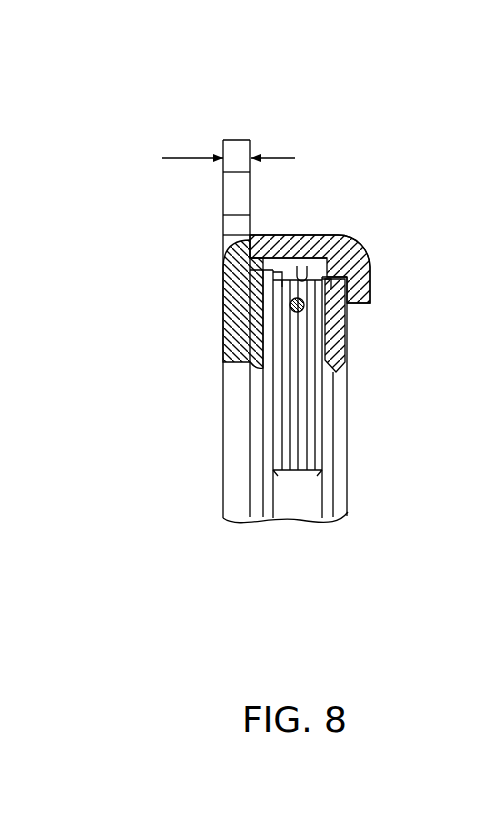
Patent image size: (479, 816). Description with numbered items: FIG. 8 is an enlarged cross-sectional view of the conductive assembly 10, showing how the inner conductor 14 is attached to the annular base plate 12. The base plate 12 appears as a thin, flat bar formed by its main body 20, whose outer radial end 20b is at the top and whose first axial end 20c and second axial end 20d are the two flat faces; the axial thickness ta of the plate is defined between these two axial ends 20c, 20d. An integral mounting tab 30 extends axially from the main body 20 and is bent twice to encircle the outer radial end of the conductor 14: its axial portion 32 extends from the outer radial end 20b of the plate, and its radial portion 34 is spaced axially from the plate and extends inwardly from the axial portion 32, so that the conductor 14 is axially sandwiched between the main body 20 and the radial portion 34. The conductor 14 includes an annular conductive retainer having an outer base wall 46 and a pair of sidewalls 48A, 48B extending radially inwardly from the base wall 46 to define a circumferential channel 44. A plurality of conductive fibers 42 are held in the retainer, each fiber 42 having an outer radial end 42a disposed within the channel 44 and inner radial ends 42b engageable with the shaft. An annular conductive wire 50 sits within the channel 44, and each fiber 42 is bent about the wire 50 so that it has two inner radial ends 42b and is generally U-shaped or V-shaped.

The conductive assembly 10 is at (105, 101).
The annular base plate 12 is at (147, 272).
The inner conductor 14 is at (360, 422).
The main body 20 is at (217, 310).
The outer radial end 20b is at (235, 140).
The first axial end 20c is at (252, 192).
The second axial end 20d is at (223, 187).
The mounting tab 30 is at (365, 240).
The axial portion 32 is at (323, 233).
The radial portion 34 is at (370, 272).
The conductive fibers 42 is at (275, 445).
The outer radial end of conductive fiber 42a is at (272, 287).
The inner radial end of conductive fiber 42b is at (273, 475).
The annular channel 44 is at (298, 273).
The outer base wall 46 is at (283, 262).
The first sidewall 48A is at (258, 342).
The second sidewall 48B is at (335, 333).
The annular conductive wire 50 is at (305, 306).